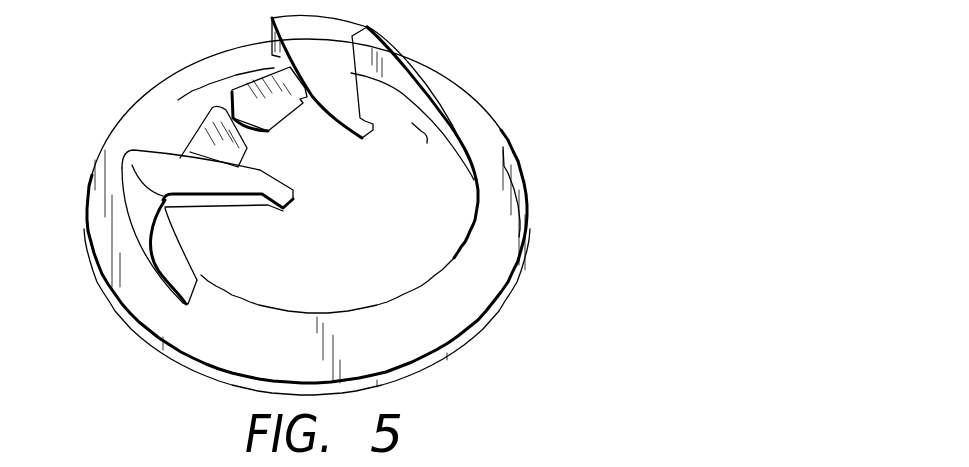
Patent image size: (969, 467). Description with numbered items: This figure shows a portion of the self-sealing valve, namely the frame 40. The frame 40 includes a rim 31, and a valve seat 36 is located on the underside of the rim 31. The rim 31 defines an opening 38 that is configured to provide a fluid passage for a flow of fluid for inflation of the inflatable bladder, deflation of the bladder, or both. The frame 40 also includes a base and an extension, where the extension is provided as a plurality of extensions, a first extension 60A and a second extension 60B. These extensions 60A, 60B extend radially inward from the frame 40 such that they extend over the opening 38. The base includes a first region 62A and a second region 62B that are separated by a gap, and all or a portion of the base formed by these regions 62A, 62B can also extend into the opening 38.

The rim 31 is at (503, 133).
The valve seat 36 is at (472, 170).
The opening 38 is at (422, 129).
The frame 40 is at (553, 164).
The first extension 60A is at (284, 219).
The second extension 60B is at (363, 139).
The first region 62A is at (200, 124).
The second region 62B is at (235, 86).